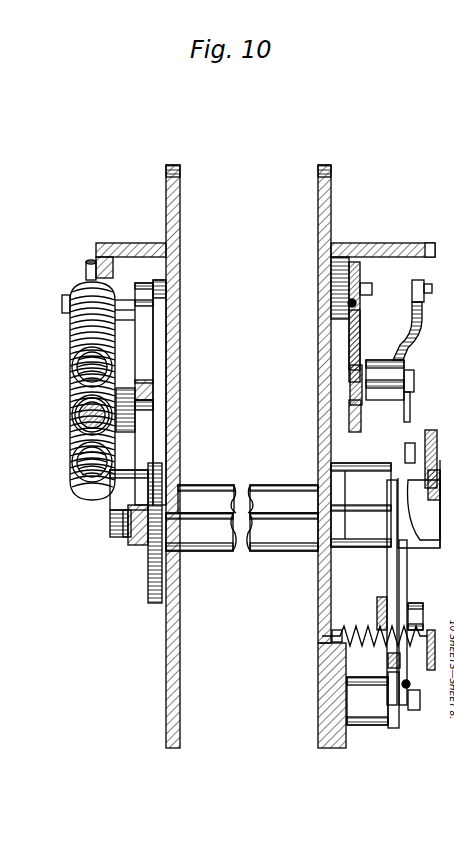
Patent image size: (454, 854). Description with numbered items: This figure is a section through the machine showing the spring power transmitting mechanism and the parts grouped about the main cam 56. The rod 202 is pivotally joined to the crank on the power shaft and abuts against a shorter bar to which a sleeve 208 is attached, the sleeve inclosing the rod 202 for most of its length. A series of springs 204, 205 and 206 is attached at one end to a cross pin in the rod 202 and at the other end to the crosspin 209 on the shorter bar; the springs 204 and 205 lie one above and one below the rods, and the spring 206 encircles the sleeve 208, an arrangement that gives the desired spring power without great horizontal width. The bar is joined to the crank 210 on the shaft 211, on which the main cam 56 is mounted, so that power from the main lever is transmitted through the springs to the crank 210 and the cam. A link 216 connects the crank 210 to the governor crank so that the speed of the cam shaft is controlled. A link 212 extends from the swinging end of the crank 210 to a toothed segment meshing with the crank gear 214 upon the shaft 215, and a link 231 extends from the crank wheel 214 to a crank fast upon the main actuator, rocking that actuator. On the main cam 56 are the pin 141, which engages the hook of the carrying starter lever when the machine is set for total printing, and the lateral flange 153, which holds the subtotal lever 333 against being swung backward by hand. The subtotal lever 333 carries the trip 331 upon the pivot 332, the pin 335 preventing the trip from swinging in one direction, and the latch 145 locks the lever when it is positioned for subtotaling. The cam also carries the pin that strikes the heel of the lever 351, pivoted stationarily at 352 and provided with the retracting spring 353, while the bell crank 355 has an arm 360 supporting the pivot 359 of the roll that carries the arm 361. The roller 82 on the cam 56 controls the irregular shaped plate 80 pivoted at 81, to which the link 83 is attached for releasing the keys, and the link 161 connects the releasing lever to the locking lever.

The crosspin 209 is at (88, 262).
The spring 204 is at (76, 340).
The sleeve 208 is at (70, 396).
The spring 206 is at (72, 417).
The rod 202 is at (72, 436).
The spring 205 is at (76, 476).
The link 212 is at (145, 318).
The crank 210 is at (160, 333).
The link 216 is at (119, 432).
The link 231 is at (118, 540).
The crank gear 214 is at (150, 600).
The shaft 211 is at (242, 486).
The shaft 215 is at (196, 552).
The lever 351 is at (356, 268).
The pivot 352 is at (368, 290).
The retracting spring 353 is at (360, 320).
The pin 141 is at (418, 281).
The main cam 56 is at (405, 350).
The pivot 359 is at (403, 380).
The arm 360 is at (348, 382).
The bell crank 355 is at (350, 418).
The arm 361 is at (409, 416).
The subtotal lever 333 is at (428, 440).
The latch 145 is at (410, 456).
The pin 335 is at (412, 488).
The lateral flange 153 is at (425, 510).
The trip 331 is at (419, 509).
The pivot 332 is at (436, 548).
The irregular shaped plate 80 is at (400, 574).
The roller 82 is at (412, 606).
The link 83 is at (388, 658).
The link 161 is at (417, 686).
The pivot 81 is at (414, 712).